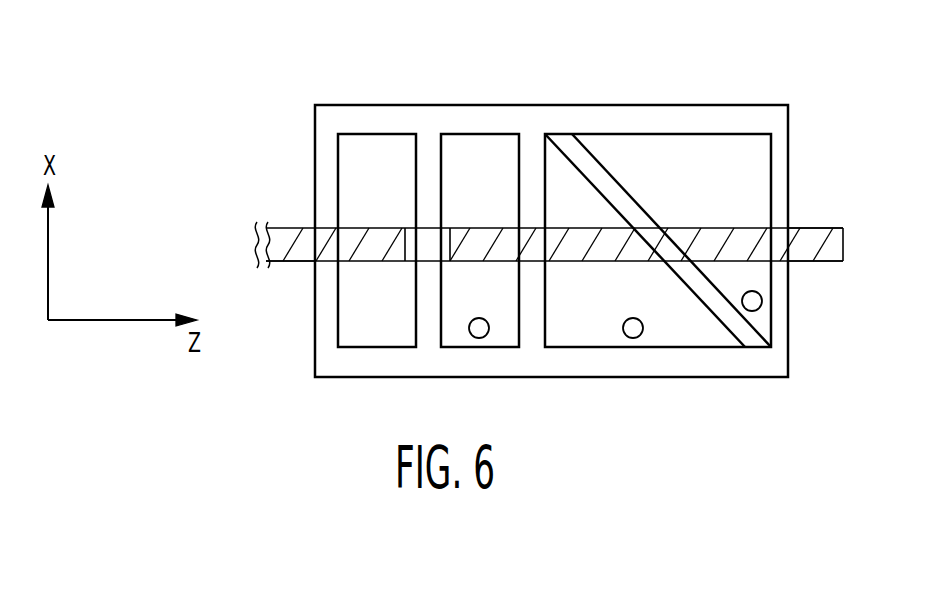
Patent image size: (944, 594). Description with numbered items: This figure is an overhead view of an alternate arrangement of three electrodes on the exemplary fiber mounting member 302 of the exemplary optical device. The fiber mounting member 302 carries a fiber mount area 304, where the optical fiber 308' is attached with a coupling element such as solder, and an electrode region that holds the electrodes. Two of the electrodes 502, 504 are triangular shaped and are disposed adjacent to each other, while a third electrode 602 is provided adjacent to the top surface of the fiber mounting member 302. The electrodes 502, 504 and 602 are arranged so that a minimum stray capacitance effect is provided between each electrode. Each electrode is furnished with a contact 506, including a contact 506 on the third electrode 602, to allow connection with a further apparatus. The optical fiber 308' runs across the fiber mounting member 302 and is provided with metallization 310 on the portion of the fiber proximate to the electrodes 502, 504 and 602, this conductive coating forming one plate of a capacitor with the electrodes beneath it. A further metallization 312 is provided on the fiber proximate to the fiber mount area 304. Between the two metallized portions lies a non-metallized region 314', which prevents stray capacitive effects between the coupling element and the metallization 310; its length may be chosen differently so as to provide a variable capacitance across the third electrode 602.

The fiber mounting member 302 is at (337, 105).
The fiber mount area 304 is at (382, 336).
The optical fiber 308' is at (524, 218).
The metallization 310 is at (823, 238).
The metallization 312 is at (297, 253).
The non-metallized region 314' is at (434, 156).
The electrode 502 is at (587, 323).
The electrode 504 is at (703, 148).
The contact 506 is at (479, 338).
The third electrode 602 is at (483, 150).